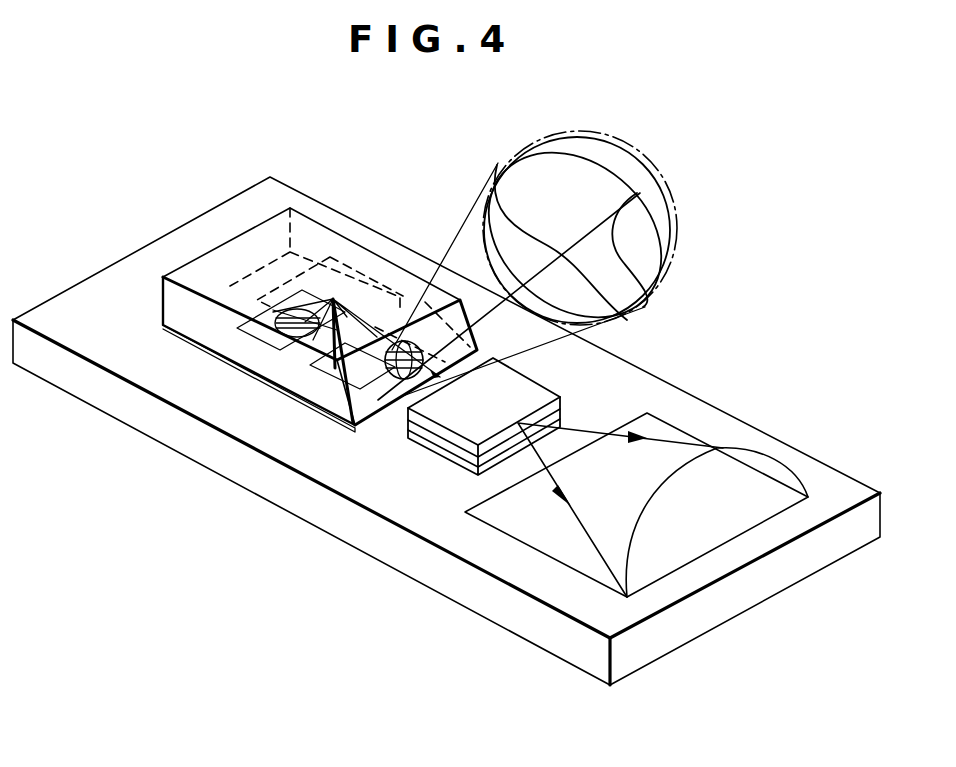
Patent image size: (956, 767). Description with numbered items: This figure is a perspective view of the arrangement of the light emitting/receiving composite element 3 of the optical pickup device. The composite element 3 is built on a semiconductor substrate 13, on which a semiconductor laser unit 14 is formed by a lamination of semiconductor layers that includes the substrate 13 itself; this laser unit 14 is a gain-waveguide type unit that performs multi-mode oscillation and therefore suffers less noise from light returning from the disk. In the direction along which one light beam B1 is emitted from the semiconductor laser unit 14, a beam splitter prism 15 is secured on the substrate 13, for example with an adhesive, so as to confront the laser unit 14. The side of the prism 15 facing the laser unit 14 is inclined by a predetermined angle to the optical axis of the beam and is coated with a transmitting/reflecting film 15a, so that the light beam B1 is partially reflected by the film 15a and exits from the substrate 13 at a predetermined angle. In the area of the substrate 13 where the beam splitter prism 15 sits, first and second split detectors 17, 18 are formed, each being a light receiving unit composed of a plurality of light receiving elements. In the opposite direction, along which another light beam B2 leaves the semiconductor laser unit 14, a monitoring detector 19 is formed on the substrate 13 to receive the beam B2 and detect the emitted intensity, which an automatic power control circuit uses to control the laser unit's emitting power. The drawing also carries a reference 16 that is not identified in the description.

The light emitting/receiving composite element 3 is at (732, 256).
The semiconductor substrate 13 is at (678, 632).
The semiconductor laser unit 14 is at (442, 442).
The beam splitter prism 15 is at (230, 253).
The transmitting/reflecting film 15a is at (357, 418).
The sub-mount 16 is at (167, 339).
The first split detector 17 is at (314, 385).
The second split detector 18 is at (250, 346).
The monitoring detector 19 is at (663, 427).
The light beam B1 is at (393, 402).
The light beam B2 is at (577, 428).